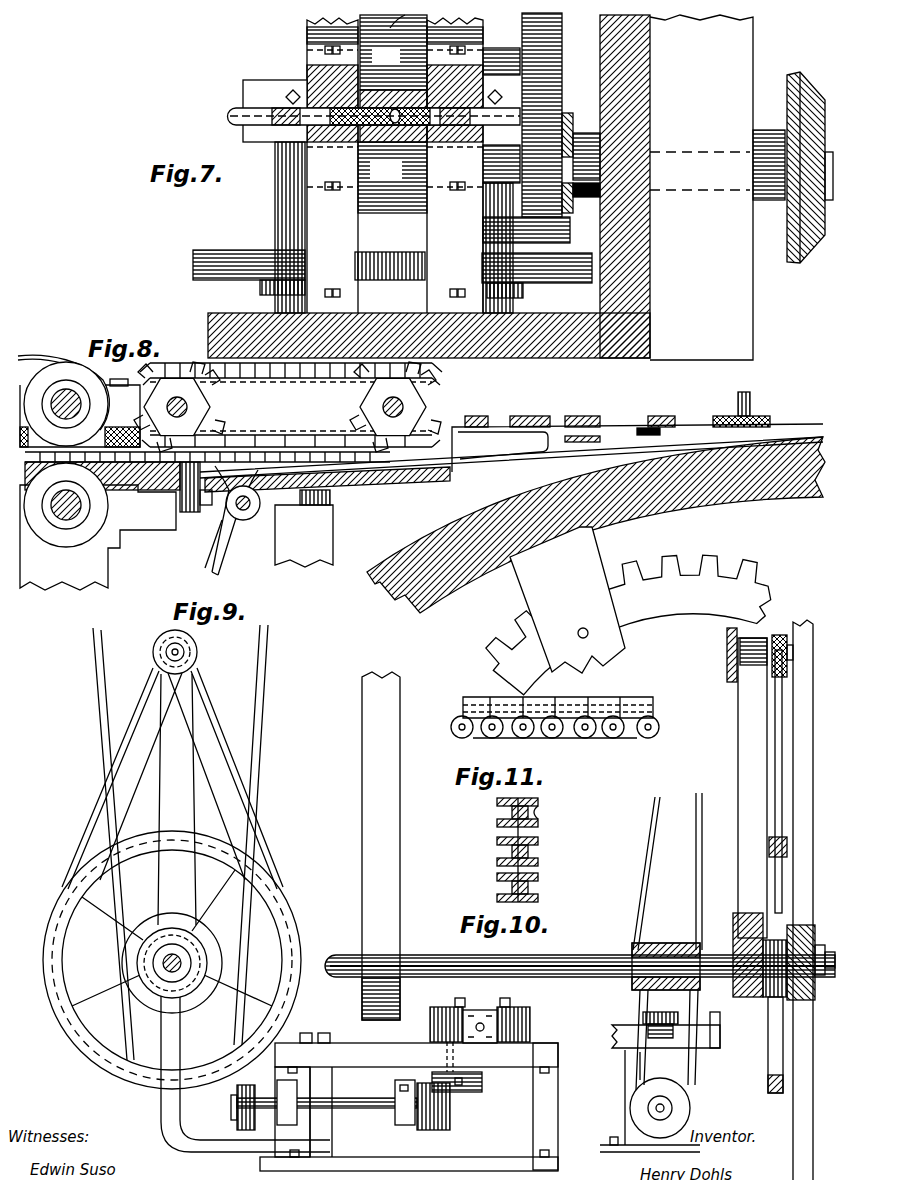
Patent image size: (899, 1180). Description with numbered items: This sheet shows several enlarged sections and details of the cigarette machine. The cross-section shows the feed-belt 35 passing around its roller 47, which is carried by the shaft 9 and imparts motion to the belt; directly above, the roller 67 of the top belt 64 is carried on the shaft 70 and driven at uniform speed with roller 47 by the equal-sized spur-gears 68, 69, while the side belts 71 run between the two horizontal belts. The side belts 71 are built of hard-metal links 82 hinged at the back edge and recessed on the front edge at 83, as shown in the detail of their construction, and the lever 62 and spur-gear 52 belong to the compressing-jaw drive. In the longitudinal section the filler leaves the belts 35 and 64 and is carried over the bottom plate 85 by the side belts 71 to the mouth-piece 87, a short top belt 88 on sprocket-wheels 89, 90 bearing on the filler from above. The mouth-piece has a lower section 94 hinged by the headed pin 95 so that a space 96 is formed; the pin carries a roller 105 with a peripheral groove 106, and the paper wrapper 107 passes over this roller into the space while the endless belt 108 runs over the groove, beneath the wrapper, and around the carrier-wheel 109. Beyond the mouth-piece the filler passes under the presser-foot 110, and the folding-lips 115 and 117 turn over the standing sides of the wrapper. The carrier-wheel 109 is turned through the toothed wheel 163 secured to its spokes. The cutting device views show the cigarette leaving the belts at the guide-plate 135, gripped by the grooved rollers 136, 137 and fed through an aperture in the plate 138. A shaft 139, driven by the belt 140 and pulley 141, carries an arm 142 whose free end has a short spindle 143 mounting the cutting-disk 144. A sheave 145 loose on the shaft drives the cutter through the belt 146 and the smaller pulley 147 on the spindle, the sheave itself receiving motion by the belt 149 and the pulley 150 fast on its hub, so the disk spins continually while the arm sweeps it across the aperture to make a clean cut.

In FIG. 7, the shaft 9 is at (697, 150).
In FIG. 8, the shaft 9 is at (72, 514).
In FIG. 7, the feed-belt 35 is at (429, 188).
In FIG. 8, the feed-belt 35 is at (98, 537).
In FIG. 7, the roller 47 is at (391, 211).
In FIG. 8, the roller 47 is at (66, 505).
In FIG. 11, the spur-gear 52 is at (628, 704).
In FIG. 8, the lever 62 is at (66, 404).
In FIG. 7, the top belt 64 is at (396, 28).
In FIG. 8, the top belt 64 is at (60, 360).
In FIG. 7, the roller 67 is at (393, 78).
In FIG. 7, the spur-gear 68 is at (561, 115).
In FIG. 7, the spur-gear 69 is at (570, 230).
In FIG. 7, the shaft 70 is at (495, 48).
In FIG. 8, the shaft 70 is at (80, 413).
In FIG. 7, the side belt 71 is at (240, 110).
In FIG. 11, the link 82 is at (613, 738).
In FIG. 8, the recess 83 is at (207, 468).
In FIG. 11, the recess 83 is at (538, 812).
In FIG. 8, the bottom plate 85 is at (153, 476).
In FIG. 8, the mouth-piece 87 is at (190, 512).
In FIG. 8, the top belt 88 is at (438, 395).
In FIG. 8, the sprocket-wheel 89 is at (200, 400).
In FIG. 8, the sprocket-wheel 90 is at (365, 410).
In FIG. 8, the lower section 94 is at (511, 473).
In FIG. 8, the headed pin 95 is at (252, 519).
In FIG. 8, the space 96 is at (330, 500).
In FIG. 8, the roller 105 is at (238, 522).
In FIG. 8, the peripheral groove 106 is at (262, 508).
In FIG. 8, the paper wrapper 107 is at (212, 548).
In FIG. 8, the endless belt 108 is at (231, 581).
In FIG. 8, the carrier-wheel 109 is at (643, 500).
In FIG. 8, the presser-foot 110 is at (637, 448).
In FIG. 8, the folding-lip 115 is at (567, 437).
In FIG. 8, the folding-lip 117 is at (646, 430).
In FIG. 10, the guide-plate 135 is at (666, 1101).
In FIG. 10, the grooved roller 136 is at (432, 1031).
In FIG. 10, the grooved roller 137 is at (530, 1030).
In FIG. 10, the plate 138 is at (605, 1027).
In FIG. 10, the shaft 139 is at (548, 955).
In FIG. 9, the belt 140 is at (97, 720).
In FIG. 10, the belt 140 is at (398, 872).
In FIG. 9, the pulley 141 is at (133, 978).
In FIG. 9, the arm 142 is at (177, 799).
In FIG. 10, the arm 142 is at (738, 757).
In FIG. 10, the spindle 143 is at (759, 641).
In FIG. 9, the cutting-disk 144 is at (198, 656).
In FIG. 10, the cutting-disk 144 is at (728, 668).
In FIG. 9, the sheave 145 is at (56, 974).
In FIG. 10, the sheave 145 is at (786, 1052).
In FIG. 9, the belt 146 is at (182, 778).
In FIG. 10, the belt 146 is at (778, 730).
In FIG. 10, the pulley 147 is at (780, 636).
In FIG. 9, the belt 149 is at (172, 776).
In FIG. 10, the belt 149 is at (819, 900).
In FIG. 9, the pulley 150 is at (186, 1004).
In FIG. 10, the pulley 150 is at (790, 1005).
In FIG. 8, the toothed wheel 163 is at (628, 611).